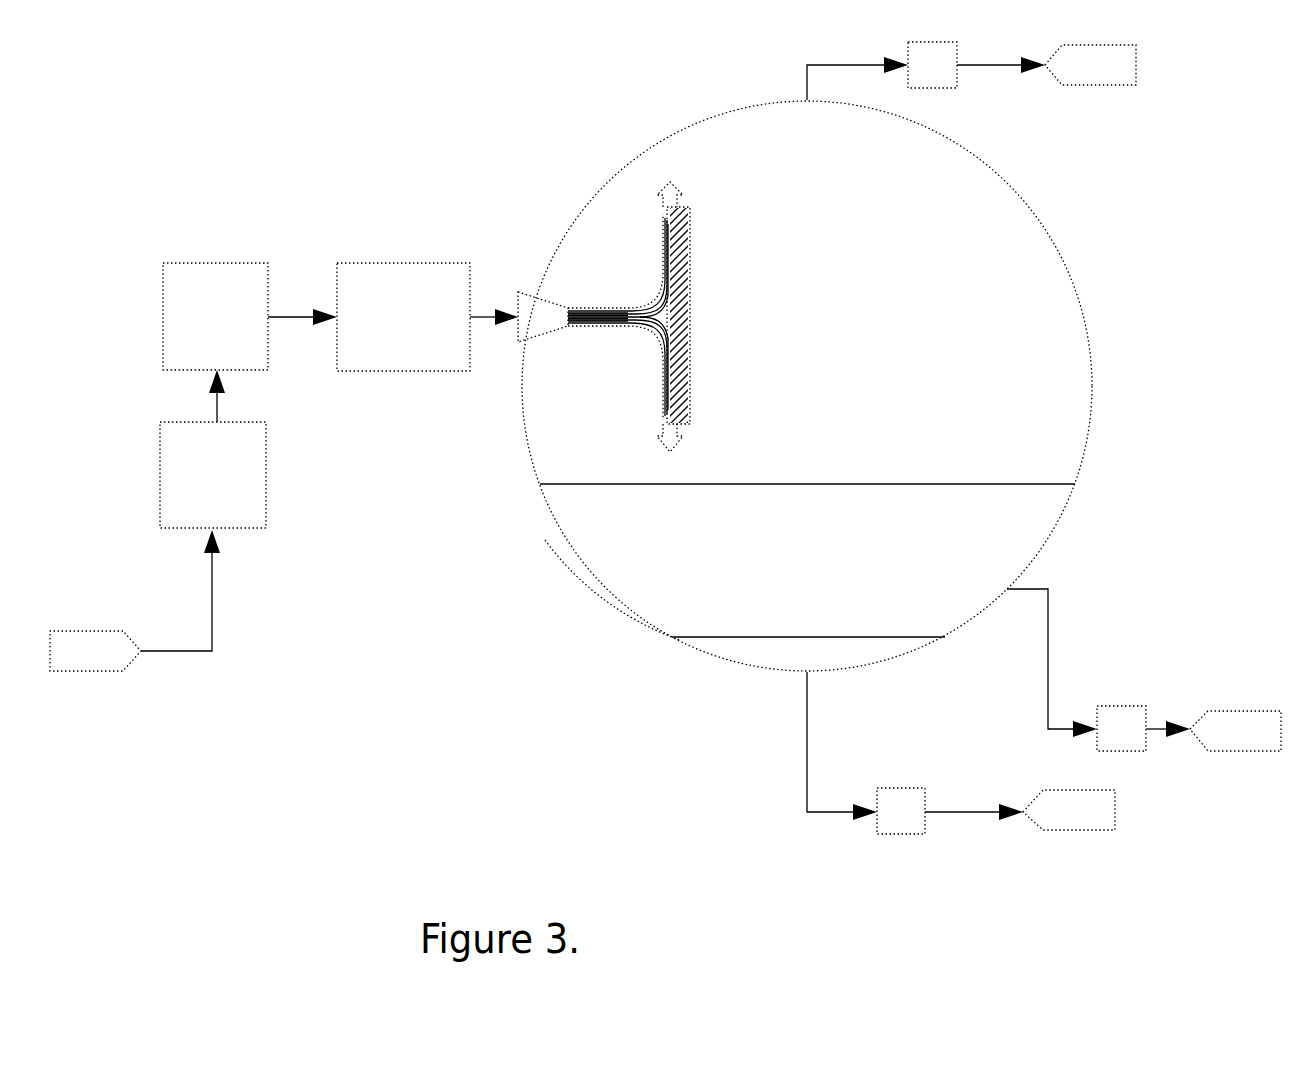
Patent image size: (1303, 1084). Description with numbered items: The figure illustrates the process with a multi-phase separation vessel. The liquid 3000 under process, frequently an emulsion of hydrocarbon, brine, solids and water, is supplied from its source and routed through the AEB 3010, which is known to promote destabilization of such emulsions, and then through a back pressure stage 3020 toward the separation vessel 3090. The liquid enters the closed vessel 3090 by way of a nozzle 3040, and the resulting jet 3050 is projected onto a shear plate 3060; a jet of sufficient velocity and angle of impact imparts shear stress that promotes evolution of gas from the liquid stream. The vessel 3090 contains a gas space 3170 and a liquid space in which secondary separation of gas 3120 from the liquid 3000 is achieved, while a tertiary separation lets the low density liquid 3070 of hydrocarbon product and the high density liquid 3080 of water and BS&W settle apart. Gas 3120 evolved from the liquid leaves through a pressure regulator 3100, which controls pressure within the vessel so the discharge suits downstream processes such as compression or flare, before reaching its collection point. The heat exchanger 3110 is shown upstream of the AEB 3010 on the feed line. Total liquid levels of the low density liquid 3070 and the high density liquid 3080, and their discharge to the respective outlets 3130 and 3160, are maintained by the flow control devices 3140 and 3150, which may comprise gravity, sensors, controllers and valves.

The liquid 3000 is at (88, 685).
The AEB 3010 is at (192, 260).
The back pressure regulator 3020 is at (363, 250).
The nozzle 3040 is at (525, 275).
The fluid stream 3050 is at (637, 338).
The shear plate 3060 is at (700, 332).
The low density liquid 3070 is at (622, 557).
The high density liquid 3080 is at (763, 667).
The vessel 3090 is at (1092, 352).
The pressure regulator 3100 is at (962, 102).
The heat exchanger (HEX) 3110 is at (272, 538).
The gas 3120 is at (1102, 95).
The side outlet collection vessel 3130 is at (1213, 707).
The flow control device 3140 is at (1128, 695).
The flow control device 3150 is at (898, 845).
The bottom outlet collection vessel 3160 is at (1070, 841).
The gas space 3170 is at (988, 368).